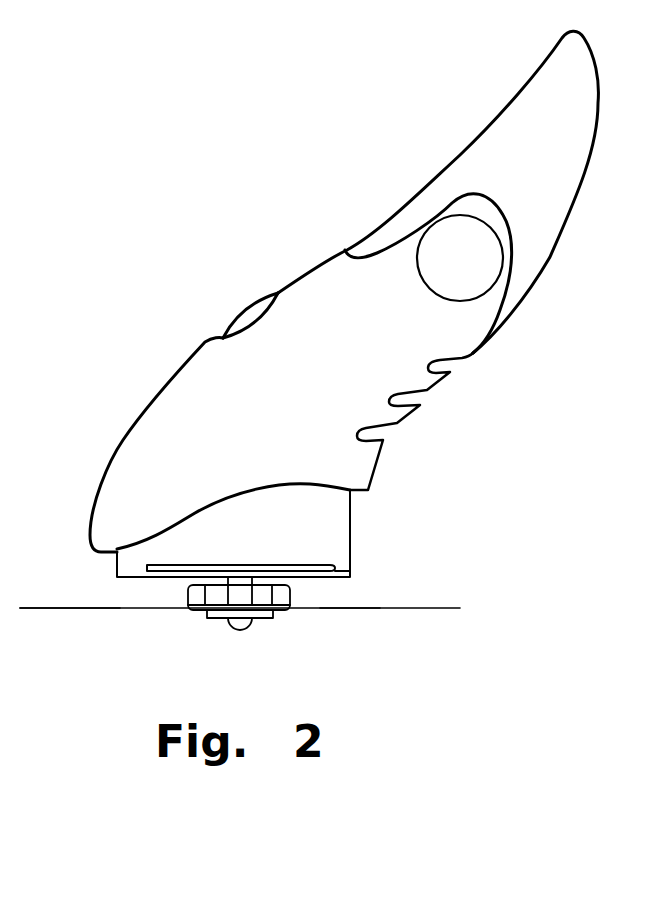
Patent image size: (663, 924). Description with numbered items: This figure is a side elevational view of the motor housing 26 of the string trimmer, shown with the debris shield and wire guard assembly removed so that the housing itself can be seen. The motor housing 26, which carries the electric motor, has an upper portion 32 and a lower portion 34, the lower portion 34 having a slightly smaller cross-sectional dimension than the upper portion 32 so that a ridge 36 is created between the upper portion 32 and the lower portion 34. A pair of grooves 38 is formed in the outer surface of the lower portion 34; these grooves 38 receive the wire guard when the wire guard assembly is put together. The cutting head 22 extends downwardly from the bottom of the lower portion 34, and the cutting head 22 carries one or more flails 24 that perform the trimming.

The cutting head 22 is at (295, 608).
The flails 24 is at (97, 610).
The motor housing 26 is at (168, 248).
The upper portion 32 is at (123, 447).
The lower portion 34 is at (343, 540).
The ridge 36 is at (325, 490).
The grooves 38 is at (347, 568).